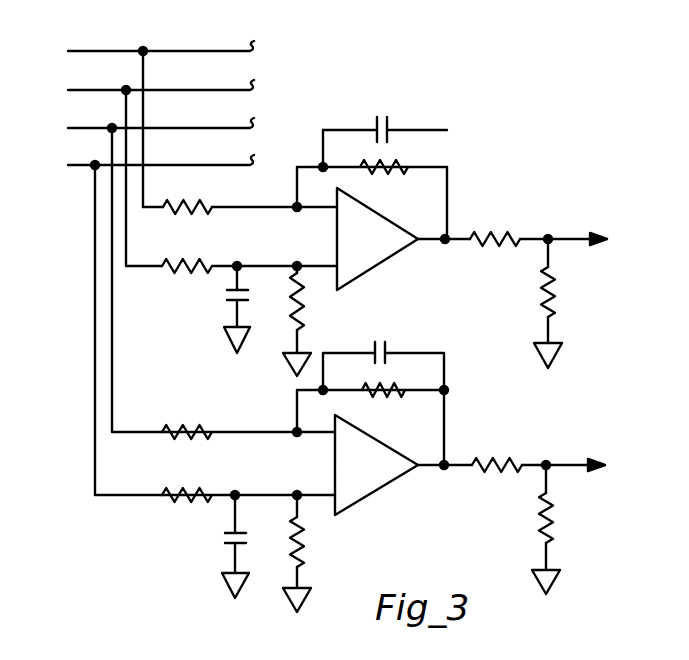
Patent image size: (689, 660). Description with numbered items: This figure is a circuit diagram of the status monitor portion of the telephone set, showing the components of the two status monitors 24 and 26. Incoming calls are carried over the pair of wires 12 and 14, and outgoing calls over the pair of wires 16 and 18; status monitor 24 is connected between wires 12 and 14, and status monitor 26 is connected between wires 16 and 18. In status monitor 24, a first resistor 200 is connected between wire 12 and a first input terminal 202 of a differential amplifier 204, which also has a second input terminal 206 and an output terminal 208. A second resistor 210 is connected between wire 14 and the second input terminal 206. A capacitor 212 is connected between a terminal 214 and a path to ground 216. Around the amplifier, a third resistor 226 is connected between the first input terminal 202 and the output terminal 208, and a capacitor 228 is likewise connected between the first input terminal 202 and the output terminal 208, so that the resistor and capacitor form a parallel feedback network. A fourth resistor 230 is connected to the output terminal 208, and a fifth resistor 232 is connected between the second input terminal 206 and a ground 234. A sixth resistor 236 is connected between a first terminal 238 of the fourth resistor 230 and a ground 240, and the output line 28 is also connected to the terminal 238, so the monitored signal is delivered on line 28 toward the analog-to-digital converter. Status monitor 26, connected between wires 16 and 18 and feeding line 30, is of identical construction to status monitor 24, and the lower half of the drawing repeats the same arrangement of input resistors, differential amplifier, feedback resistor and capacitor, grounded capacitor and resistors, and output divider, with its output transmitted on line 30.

The wire 12 is at (68, 51).
The wire 14 is at (68, 90).
The wire 16 is at (68, 128).
The wire 18 is at (68, 166).
The status monitor 24 is at (462, 186).
The status monitor 26 is at (458, 430).
The line 28 is at (574, 238).
The line 30 is at (565, 460).
The first resistor 200 is at (210, 202).
The first input terminal 202 is at (295, 206).
The differential amplifier 204 is at (382, 250).
The second input terminal 206 is at (297, 268).
The output terminal 208 is at (445, 243).
The second resistor 210 is at (208, 260).
The capacitor 212 is at (228, 301).
The terminal 214 is at (253, 250).
The path to ground 216 is at (226, 347).
The third resistor 226 is at (398, 175).
The capacitor 228 is at (377, 113).
The fourth resistor 230 is at (498, 230).
The fifth resistor 232 is at (301, 329).
The ground 234 is at (292, 370).
The sixth resistor 236 is at (559, 286).
The first terminal 238 is at (548, 235).
The ground 240 is at (560, 360).